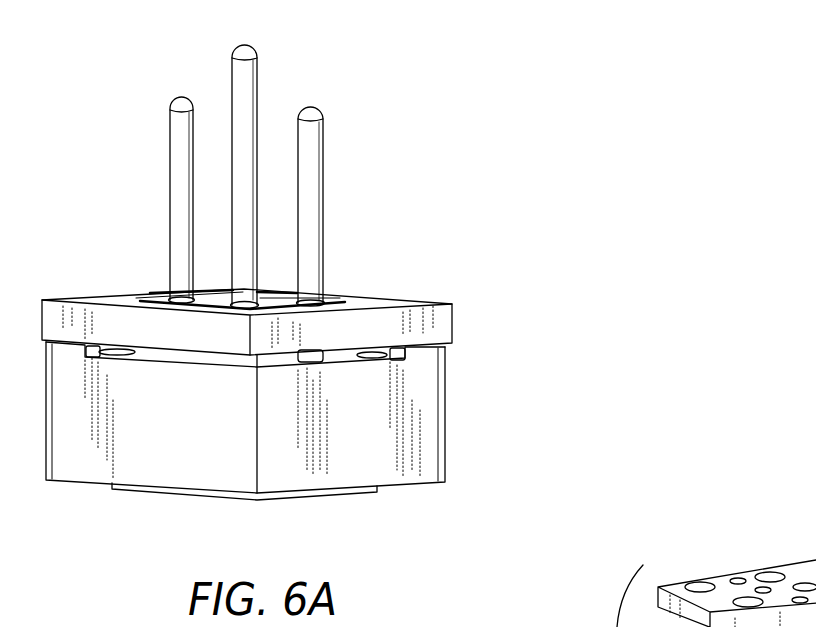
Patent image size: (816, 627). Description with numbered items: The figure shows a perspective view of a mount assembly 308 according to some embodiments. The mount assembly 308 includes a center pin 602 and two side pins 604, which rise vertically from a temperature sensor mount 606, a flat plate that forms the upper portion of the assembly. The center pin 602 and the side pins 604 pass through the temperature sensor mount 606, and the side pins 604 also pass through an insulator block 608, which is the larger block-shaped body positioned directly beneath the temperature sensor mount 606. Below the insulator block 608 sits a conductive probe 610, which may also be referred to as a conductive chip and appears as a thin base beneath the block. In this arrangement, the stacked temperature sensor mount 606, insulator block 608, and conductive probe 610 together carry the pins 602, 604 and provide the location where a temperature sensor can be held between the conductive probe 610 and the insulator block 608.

The mount assembly 308 is at (500, 142).
The center pin 602 is at (232, 77).
The side pins 604 is at (170, 203).
The temperature sensor mount 606 is at (452, 320).
The insulator block 608 is at (446, 428).
The conductive probe 610 is at (153, 492).